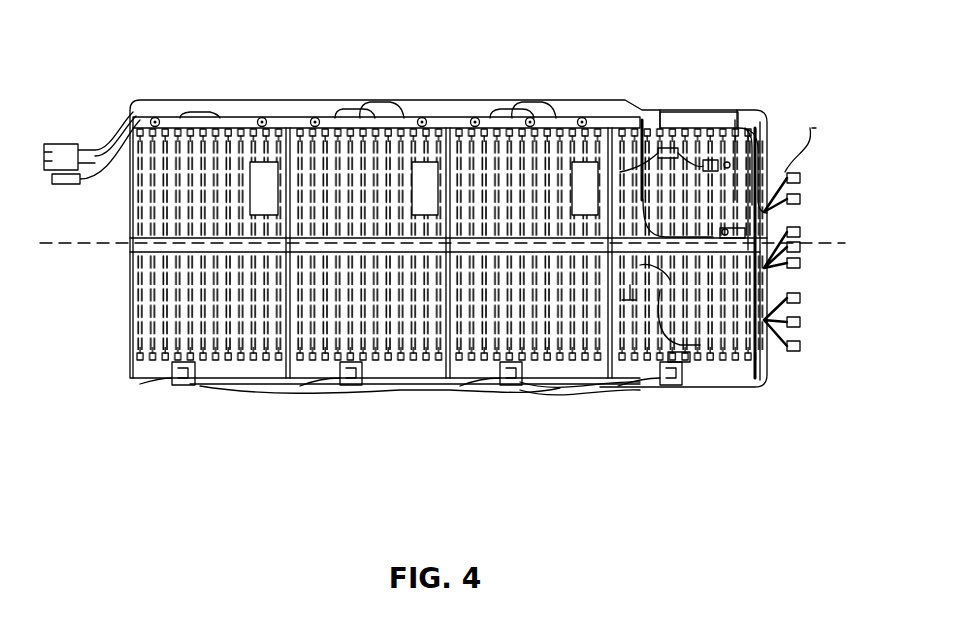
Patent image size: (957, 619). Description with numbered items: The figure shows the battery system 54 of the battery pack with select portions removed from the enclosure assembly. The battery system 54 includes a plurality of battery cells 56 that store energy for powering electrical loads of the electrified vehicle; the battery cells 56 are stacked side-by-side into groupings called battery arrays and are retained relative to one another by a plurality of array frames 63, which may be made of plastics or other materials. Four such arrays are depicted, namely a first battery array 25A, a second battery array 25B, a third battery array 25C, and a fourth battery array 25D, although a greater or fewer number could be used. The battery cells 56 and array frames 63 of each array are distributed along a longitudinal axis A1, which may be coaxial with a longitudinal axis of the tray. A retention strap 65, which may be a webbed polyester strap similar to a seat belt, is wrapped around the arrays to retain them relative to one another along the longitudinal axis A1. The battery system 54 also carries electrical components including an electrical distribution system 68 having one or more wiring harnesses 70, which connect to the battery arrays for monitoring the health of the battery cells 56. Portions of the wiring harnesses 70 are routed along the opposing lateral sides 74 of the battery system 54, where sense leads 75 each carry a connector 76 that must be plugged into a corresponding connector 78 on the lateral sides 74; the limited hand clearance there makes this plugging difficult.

The battery system 54 is at (553, 70).
The battery cells 56 is at (158, 117).
The array frames 63 is at (250, 117).
The retention strap 65 is at (152, 240).
The electrical distribution system 68 is at (762, 116).
The wiring harnesses 70 is at (598, 112).
The lateral sides 74 is at (433, 105).
The sense leads 75 is at (180, 382).
The connector 76 is at (170, 376).
The connector 78 is at (198, 386).
The first battery array 25A is at (258, 380).
The second battery array 25B is at (427, 380).
The third battery array 25C is at (574, 382).
The fourth battery array 25D is at (710, 322).
The longitudinal axis A1 is at (92, 243).